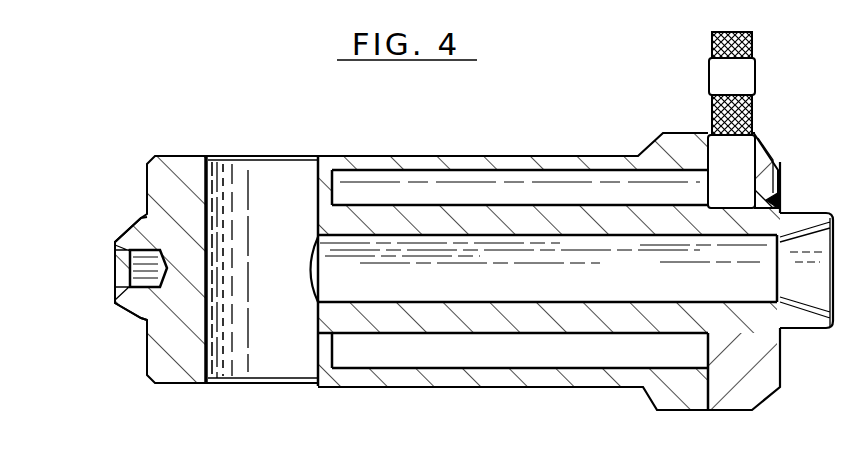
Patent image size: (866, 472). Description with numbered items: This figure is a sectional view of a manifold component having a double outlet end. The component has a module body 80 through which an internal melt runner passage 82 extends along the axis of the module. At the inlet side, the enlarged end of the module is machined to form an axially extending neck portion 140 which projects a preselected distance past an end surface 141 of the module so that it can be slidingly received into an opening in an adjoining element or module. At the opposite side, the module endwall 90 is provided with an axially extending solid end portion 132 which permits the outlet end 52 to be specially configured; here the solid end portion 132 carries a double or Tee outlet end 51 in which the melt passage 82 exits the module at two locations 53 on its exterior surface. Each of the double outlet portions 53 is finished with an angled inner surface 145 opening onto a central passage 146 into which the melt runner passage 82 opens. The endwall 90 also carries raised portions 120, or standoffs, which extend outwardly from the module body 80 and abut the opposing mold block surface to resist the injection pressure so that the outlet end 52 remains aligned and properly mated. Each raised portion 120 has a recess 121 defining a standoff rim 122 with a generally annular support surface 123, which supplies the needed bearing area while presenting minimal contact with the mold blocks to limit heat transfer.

The double or Tee outlet end 51 is at (262, 222).
The outlet end 52 is at (188, 155).
The double outlet portions 53 is at (297, 177).
The module body 80 is at (548, 158).
The internal melt runner passage 82 is at (522, 279).
The module endwall 90 is at (172, 195).
The raised portions 120 is at (137, 238).
The recess 121 is at (130, 267).
The standoff rim 122 is at (115, 303).
The annular support surface 123 is at (130, 250).
The solid end portion 132 is at (200, 385).
The neck portion 140 is at (810, 213).
The end surface 141 is at (780, 168).
The angled inner surface 145 is at (207, 155).
The central passage 146 is at (277, 333).